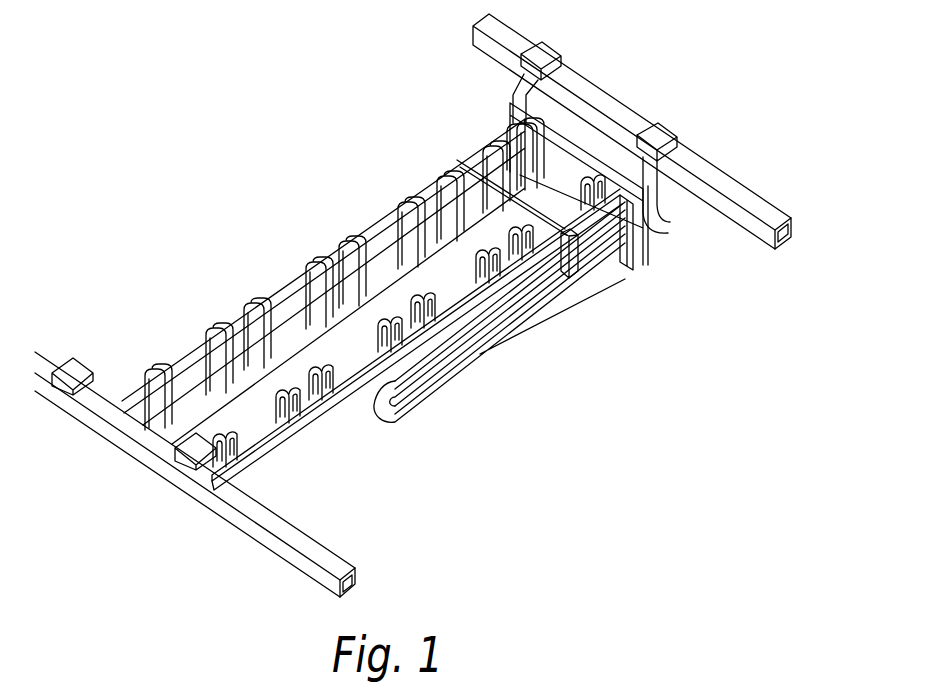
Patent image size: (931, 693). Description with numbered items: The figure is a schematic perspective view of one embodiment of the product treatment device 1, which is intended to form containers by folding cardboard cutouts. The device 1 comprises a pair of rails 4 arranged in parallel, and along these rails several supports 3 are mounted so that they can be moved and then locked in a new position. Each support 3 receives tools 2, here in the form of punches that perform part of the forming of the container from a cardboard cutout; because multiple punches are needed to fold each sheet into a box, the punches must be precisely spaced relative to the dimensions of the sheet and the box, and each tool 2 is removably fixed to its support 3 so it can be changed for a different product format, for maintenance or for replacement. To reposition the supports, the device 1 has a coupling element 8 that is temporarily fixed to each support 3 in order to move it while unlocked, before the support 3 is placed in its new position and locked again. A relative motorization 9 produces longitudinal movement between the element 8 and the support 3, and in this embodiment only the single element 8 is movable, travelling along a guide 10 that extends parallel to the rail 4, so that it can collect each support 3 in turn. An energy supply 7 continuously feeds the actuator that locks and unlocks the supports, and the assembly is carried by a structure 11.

The product treatment device 1 is at (724, 134).
The tool 2 is at (297, 282).
The support 3 is at (340, 387).
The rail 4 is at (378, 243).
The energy supply 7 is at (530, 333).
The coupling element 8 is at (585, 256).
The relative motorization 9 is at (478, 357).
The guide 10 is at (297, 432).
The structure 11 is at (508, 119).